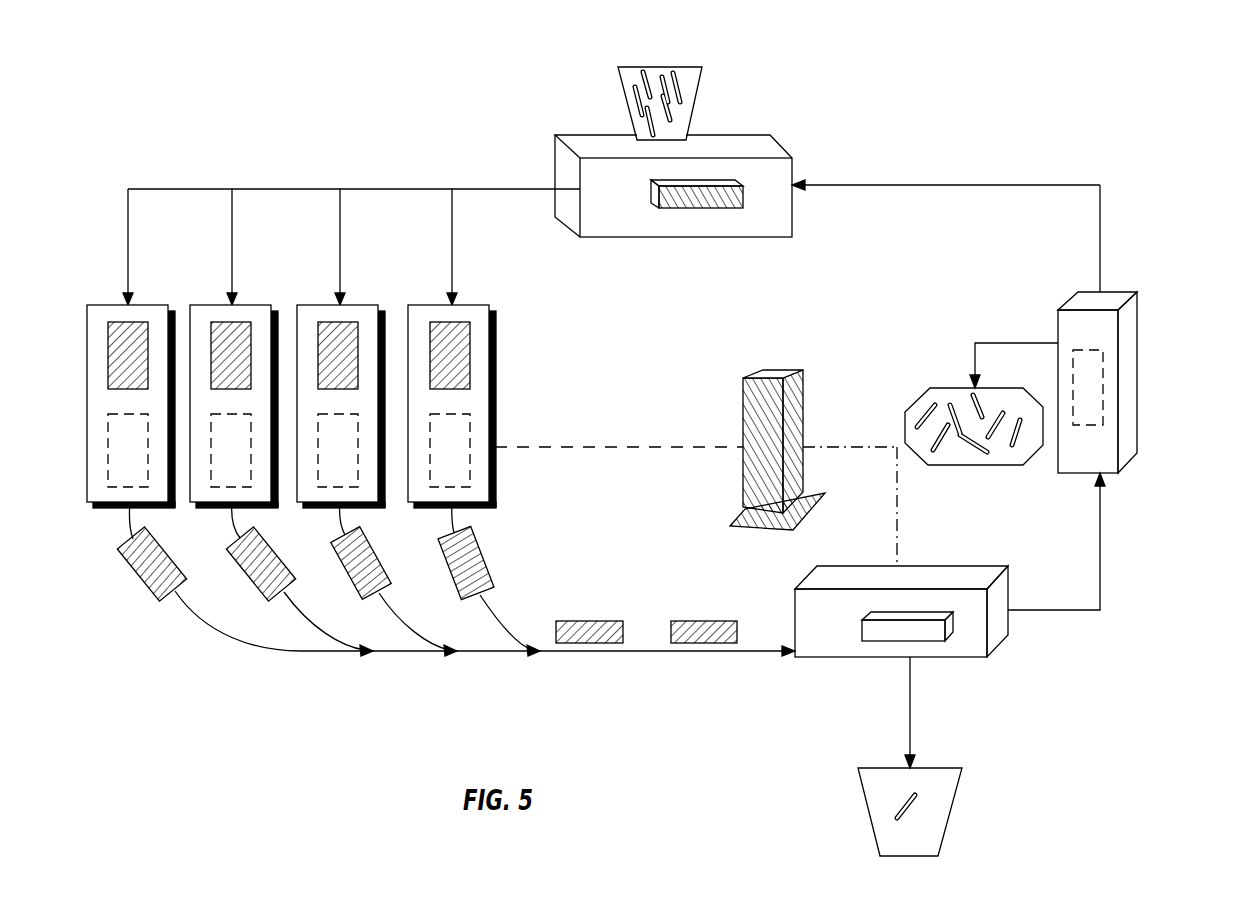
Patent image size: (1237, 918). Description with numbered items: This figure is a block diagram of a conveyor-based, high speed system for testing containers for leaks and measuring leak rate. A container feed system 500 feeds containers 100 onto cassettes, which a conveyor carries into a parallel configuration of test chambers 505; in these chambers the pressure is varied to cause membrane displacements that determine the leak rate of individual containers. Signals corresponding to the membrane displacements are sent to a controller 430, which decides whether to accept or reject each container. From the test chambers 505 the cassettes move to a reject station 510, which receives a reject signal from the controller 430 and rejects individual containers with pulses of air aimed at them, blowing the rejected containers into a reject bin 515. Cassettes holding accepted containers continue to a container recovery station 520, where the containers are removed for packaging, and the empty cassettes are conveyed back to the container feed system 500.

The containers 100 is at (685, 82).
The container feed system 500 is at (681, 168).
The test chambers 505 is at (272, 385).
The controller 430 is at (750, 450).
The reject station 510 is at (891, 634).
The reject bin 515 is at (939, 812).
The container recovery station 520 is at (1134, 382).